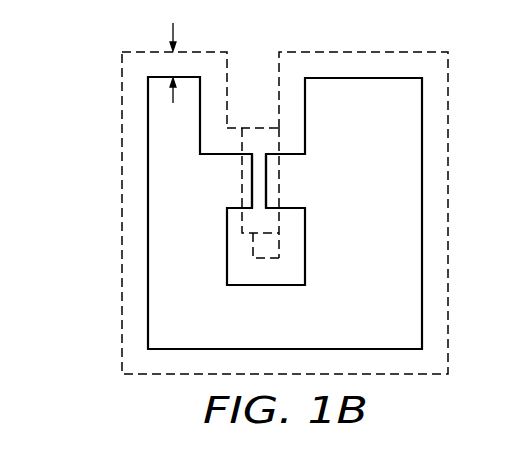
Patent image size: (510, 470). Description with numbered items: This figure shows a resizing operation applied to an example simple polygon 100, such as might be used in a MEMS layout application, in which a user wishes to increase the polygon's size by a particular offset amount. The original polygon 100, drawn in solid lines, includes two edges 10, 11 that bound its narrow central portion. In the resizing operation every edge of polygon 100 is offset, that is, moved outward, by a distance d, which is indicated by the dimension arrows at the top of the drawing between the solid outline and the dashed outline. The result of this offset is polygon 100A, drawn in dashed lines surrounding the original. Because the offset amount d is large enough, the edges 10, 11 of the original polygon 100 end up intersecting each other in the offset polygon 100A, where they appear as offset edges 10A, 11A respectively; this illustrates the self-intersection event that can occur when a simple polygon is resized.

The simple polygon 100 is at (328, 67).
The offset polygon 100A is at (111, 171).
The edge 10 is at (251, 178).
The edge 11 is at (267, 177).
The offset edge 10A is at (279, 136).
The offset edge 11A is at (244, 135).
The offset distance d is at (173, 63).